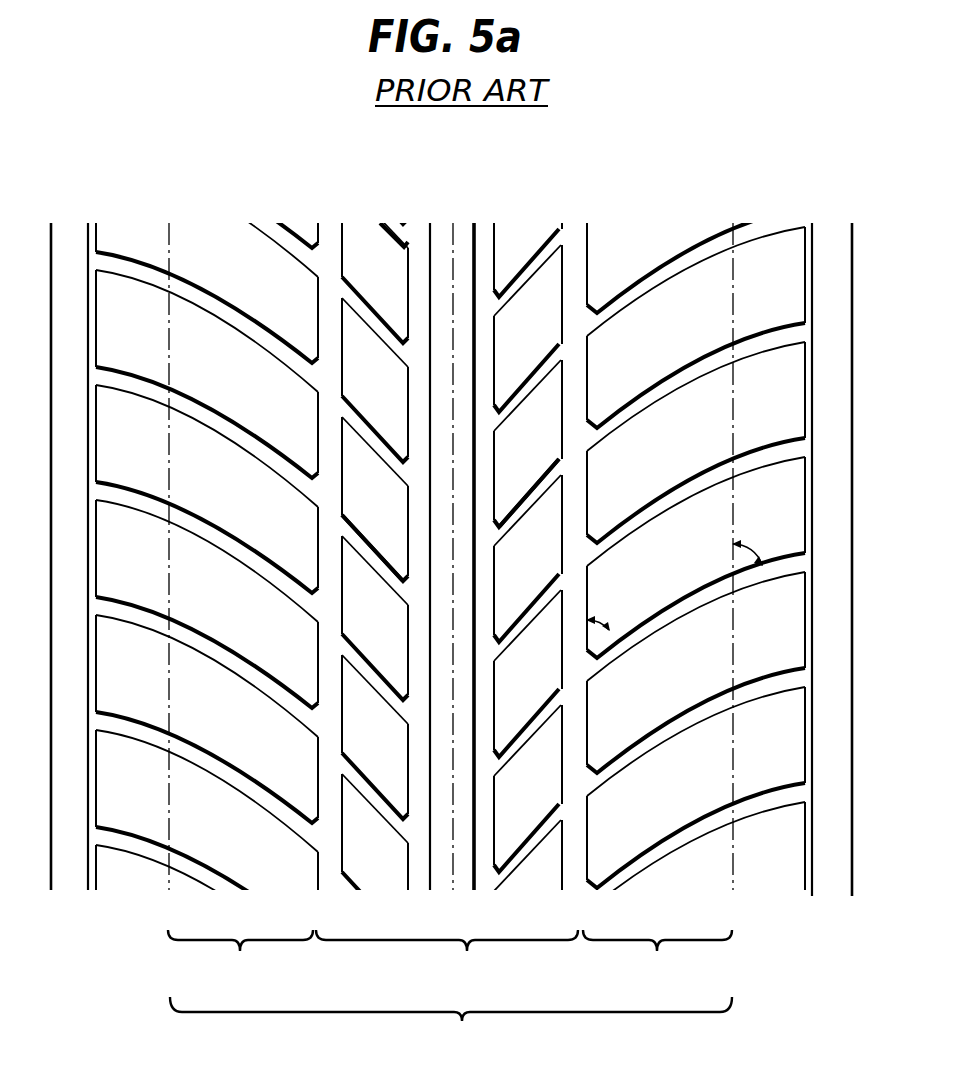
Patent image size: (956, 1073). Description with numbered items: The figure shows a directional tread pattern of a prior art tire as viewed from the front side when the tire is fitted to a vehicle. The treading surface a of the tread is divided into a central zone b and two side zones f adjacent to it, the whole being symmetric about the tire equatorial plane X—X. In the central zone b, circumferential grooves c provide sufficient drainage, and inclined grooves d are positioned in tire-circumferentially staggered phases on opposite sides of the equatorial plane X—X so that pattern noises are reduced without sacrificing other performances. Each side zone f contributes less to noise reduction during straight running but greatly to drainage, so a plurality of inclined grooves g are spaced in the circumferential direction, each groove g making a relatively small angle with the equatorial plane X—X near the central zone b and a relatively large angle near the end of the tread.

The tire equatorial plane X is at (452, 558).
The inclined grooves g is at (213, 800).
The circumferential grooves c is at (333, 332).
The inclined grooves d is at (368, 541).
The side zone f is at (450, 954).
The central zone b is at (447, 955).
The treading surface a is at (451, 1021).